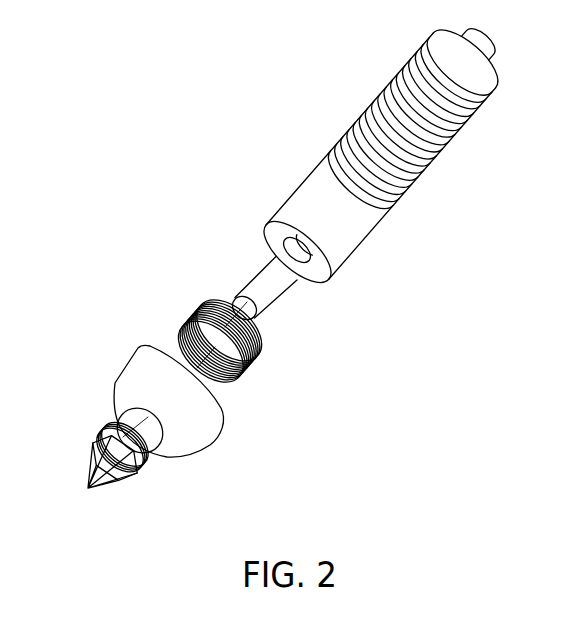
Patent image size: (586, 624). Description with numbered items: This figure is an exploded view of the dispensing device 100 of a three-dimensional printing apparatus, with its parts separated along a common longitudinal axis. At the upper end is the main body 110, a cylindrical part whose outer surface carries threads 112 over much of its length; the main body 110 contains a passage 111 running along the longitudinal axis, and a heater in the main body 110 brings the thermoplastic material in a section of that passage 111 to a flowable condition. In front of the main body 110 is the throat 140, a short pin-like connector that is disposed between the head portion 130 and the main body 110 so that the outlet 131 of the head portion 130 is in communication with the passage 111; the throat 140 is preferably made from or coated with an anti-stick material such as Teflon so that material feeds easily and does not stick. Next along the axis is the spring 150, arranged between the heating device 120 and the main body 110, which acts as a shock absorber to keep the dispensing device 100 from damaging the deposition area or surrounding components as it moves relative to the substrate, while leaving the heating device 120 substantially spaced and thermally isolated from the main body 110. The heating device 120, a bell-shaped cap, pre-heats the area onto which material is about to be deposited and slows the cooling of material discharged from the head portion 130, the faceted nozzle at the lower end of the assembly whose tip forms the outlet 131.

The dispensing device 100 is at (130, 155).
The main body 110 is at (360, 222).
The passage 111 is at (290, 246).
The threads 112 is at (442, 148).
The heating device 120 is at (208, 418).
The head portion 130 is at (138, 470).
The outlet 131 is at (88, 490).
The throat 140 is at (276, 296).
The spring 150 is at (257, 357).